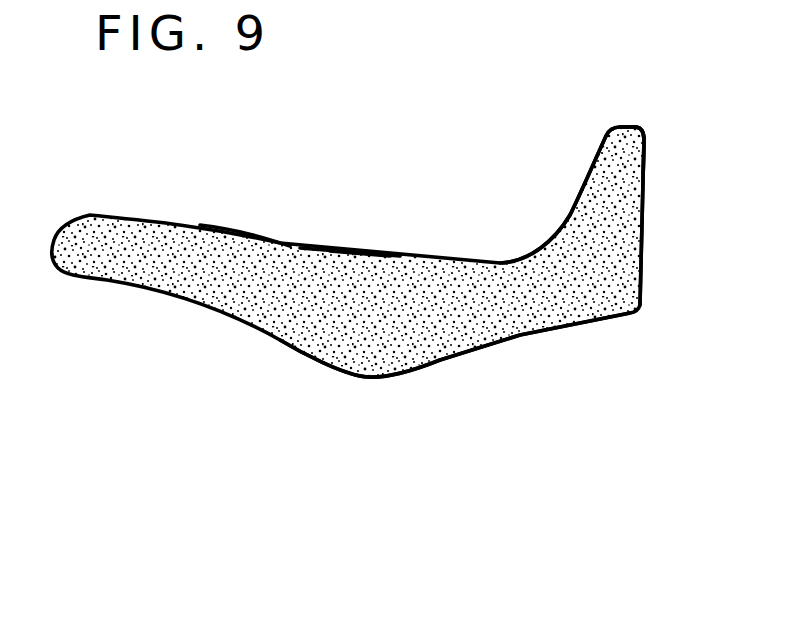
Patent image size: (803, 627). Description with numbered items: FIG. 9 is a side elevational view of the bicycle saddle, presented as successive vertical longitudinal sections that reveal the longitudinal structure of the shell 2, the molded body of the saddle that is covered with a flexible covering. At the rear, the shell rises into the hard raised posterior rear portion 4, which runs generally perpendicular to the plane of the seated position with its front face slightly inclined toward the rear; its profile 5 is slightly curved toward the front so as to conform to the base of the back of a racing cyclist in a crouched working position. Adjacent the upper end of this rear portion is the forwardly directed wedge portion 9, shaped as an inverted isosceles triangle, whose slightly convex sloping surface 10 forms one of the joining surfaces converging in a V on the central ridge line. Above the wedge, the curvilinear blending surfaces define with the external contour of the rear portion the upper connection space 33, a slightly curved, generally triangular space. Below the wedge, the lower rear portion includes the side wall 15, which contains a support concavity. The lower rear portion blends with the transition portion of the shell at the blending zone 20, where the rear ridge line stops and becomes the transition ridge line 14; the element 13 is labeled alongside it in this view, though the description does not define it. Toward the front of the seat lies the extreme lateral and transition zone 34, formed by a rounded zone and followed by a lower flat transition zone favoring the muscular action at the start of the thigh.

The shell 2 is at (203, 206).
The raised posterior rear portion 4 is at (656, 95).
The profile 5 is at (647, 214).
The wedge portion 9 is at (587, 183).
The sloping surface 10 is at (293, 250).
The upper layer 13 is at (352, 262).
The transition ridge line 14 is at (352, 262).
The side wall 15 is at (423, 280).
The blending zone 20 is at (520, 267).
The upper connection space 33 is at (618, 125).
The extreme lateral and transition zone 34 is at (377, 350).